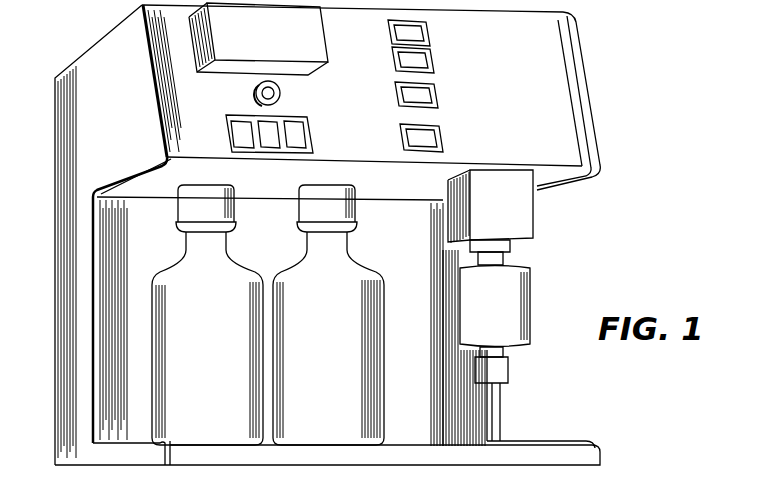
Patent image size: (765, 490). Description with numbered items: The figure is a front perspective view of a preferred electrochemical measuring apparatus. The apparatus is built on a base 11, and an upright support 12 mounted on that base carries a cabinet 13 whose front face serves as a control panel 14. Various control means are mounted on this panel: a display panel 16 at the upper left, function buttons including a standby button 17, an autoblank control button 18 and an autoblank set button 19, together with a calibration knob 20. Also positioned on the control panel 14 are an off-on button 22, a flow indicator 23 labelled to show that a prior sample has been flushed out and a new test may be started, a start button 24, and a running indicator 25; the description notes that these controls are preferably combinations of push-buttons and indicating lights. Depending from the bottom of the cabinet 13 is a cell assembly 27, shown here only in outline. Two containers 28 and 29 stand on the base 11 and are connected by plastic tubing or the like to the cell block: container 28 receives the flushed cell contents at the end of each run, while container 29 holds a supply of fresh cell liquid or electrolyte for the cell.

The base 11 is at (566, 447).
The upright support 12 is at (66, 296).
The cabinet 13 is at (75, 101).
The control panel 14 is at (565, 101).
The display panel 16 is at (208, 46).
The standby button 17 is at (298, 133).
The autoblank control button 18 is at (268, 128).
The autoblank set button 19 is at (228, 134).
The calibration knob 20 is at (254, 92).
The off-on button 22 is at (415, 135).
The flow indicator 23 is at (394, 33).
The start button 24 is at (405, 95).
The running indicator 25 is at (400, 60).
The cell assembly 27 is at (541, 256).
The container 28 is at (384, 295).
The container 29 is at (162, 318).